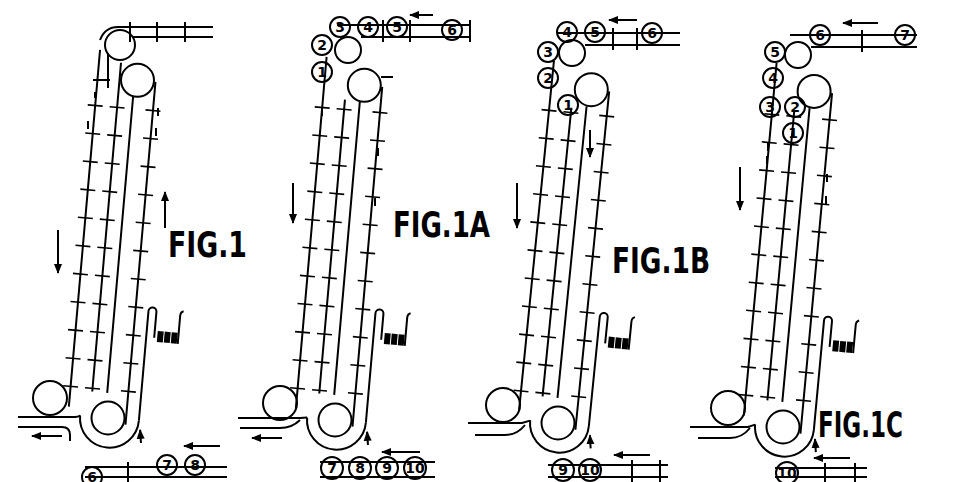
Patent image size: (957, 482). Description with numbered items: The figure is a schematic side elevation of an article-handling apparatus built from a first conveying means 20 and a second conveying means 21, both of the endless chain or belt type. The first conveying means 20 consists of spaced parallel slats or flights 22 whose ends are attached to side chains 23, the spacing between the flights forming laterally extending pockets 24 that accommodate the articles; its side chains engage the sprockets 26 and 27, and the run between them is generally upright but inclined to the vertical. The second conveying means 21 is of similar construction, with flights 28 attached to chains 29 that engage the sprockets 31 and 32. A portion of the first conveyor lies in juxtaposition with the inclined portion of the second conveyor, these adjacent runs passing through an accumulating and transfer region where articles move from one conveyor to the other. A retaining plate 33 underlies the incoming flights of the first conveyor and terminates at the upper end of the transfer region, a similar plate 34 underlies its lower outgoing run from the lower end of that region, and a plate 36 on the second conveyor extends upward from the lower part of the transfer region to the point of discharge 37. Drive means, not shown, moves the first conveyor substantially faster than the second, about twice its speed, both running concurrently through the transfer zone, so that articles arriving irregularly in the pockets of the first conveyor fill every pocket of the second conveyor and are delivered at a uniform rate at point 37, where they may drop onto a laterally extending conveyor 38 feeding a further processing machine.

In FIG. 1, the first conveying means 20 is at (80, 205).
In FIG. 1A, the first conveying means 20 is at (303, 270).
In FIG. 1B, the first conveying means 20 is at (522, 272).
In FIG. 1, the second conveying means 21 is at (155, 182).
In FIG. 1A, the second conveying means 21 is at (386, 260).
In FIG. 1B, the second conveying means 21 is at (614, 192).
In FIG. 1C, the second conveying means 21 is at (827, 257).
In FIG. 1, the flights 22 is at (97, 82).
In FIG. 1A, the flights 22 is at (322, 112).
In FIG. 1C, the flights 22 is at (768, 147).
In FIG. 1, the side chains 23 is at (97, 95).
In FIG. 1C, the side chains 23 is at (767, 160).
In FIG. 1, the pockets 24 is at (88, 125).
In FIG. 1, the sprocket 26 is at (107, 33).
In FIG. 1, the sprocket 27 is at (48, 381).
In FIG. 1A, the sprocket 27 is at (276, 386).
In FIG. 1C, the sprocket 27 is at (723, 392).
In FIG. 1, the flights 28 is at (160, 112).
In FIG. 1A, the flights 28 is at (376, 202).
In FIG. 1C, the flights 28 is at (828, 178).
In FIG. 1, the chains 29 is at (157, 132).
In FIG. 1A, the chains 29 is at (379, 152).
In FIG. 1C, the chains 29 is at (828, 200).
In FIG. 1, the sprocket 31 is at (157, 80).
In FIG. 1B, the sprocket 31 is at (606, 90).
In FIG. 1C, the sprocket 31 is at (828, 94).
In FIG. 1, the sprocket 32 is at (128, 417).
In FIG. 1A, the sprocket 32 is at (350, 418).
In FIG. 1B, the sprocket 32 is at (568, 425).
In FIG. 1, the retaining plate 33 is at (204, 38).
In FIG. 1A, the retaining plate 33 is at (442, 40).
In FIG. 1B, the retaining plate 33 is at (662, 47).
In FIG. 1, the plate 34 is at (240, 427).
In FIG. 1A, the plate 34 is at (239, 425).
In FIG. 1, the plate 36 is at (145, 377).
In FIG. 1A, the plate 36 is at (367, 392).
In FIG. 1B, the plate 36 is at (597, 392).
In FIG. 1, the point of discharge 37 is at (158, 302).
In FIG. 1A, the point of discharge 37 is at (383, 307).
In FIG. 1C, the point of discharge 37 is at (846, 317).
In FIG. 1, the laterally extending conveyor 38 is at (175, 340).
In FIG. 1A, the laterally extending conveyor 38 is at (390, 353).
In FIG. 1B, the laterally extending conveyor 38 is at (620, 360).